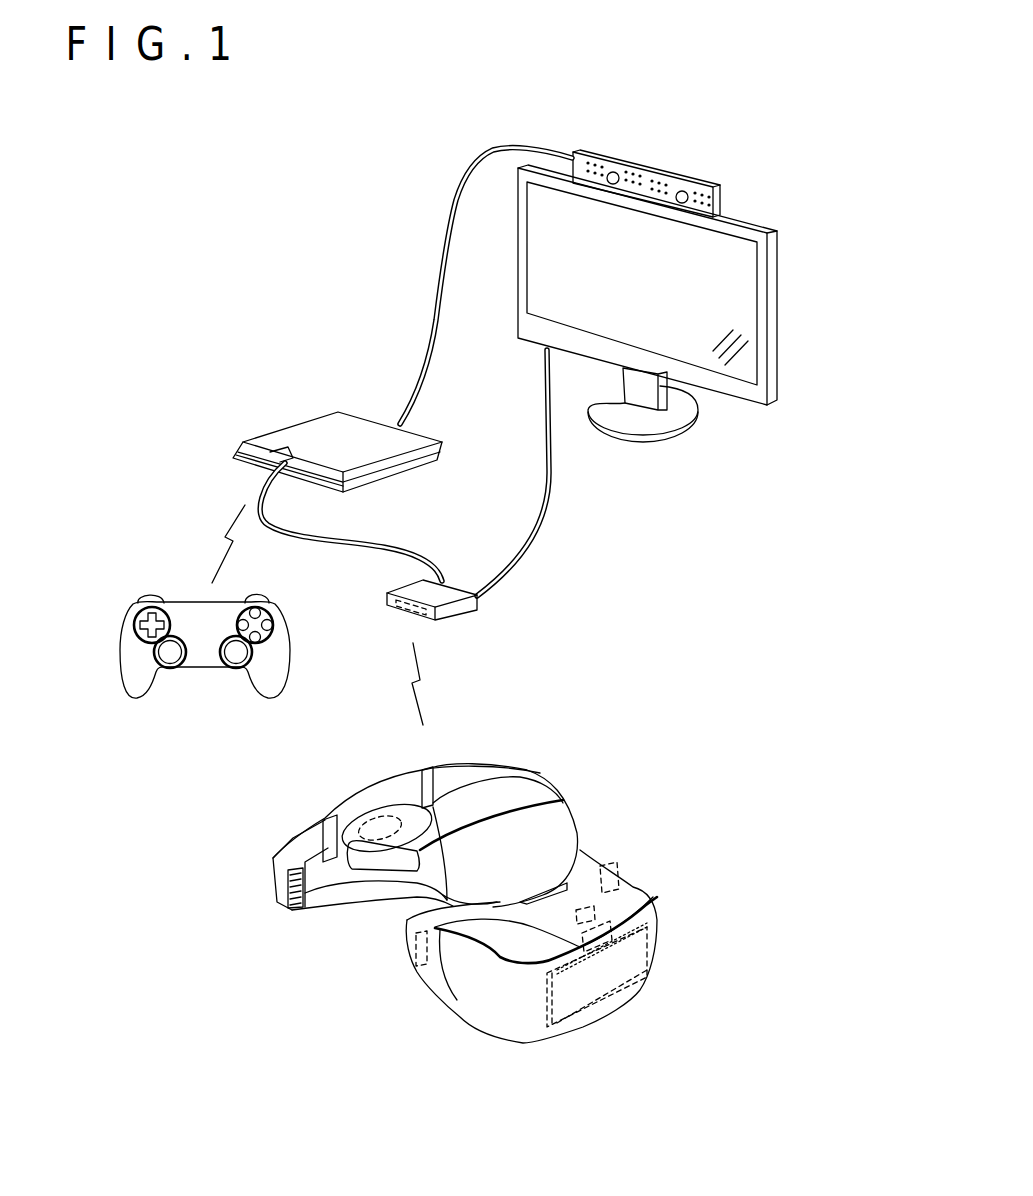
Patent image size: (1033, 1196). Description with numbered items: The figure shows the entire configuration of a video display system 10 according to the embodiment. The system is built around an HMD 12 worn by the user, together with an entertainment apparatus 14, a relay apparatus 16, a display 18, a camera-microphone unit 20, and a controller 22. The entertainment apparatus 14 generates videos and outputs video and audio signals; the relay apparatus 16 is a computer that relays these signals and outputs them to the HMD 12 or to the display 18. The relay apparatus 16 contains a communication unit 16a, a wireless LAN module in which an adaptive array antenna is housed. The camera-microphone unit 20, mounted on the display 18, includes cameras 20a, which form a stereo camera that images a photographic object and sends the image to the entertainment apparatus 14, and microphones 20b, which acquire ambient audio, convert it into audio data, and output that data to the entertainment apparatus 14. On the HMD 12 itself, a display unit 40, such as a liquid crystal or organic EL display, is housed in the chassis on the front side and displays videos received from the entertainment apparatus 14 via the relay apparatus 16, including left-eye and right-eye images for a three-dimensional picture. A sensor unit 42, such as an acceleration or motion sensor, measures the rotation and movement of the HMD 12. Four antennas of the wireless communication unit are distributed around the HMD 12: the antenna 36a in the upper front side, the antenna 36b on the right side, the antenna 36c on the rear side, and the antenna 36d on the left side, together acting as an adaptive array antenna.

The video display system 10 is at (760, 1033).
The HMD 12 is at (492, 1040).
The entertainment apparatus 14 is at (283, 432).
The relay apparatus 16 is at (459, 620).
The communication unit 16a is at (437, 621).
The display 18 is at (778, 311).
The camera-microphone unit 20 is at (722, 202).
The cameras 20a is at (613, 184).
The microphones 20b is at (641, 166).
The controller 22 is at (290, 655).
The antenna 36a is at (652, 888).
The antenna 36b is at (422, 970).
The antenna 36c is at (393, 830).
The antenna 36d is at (611, 864).
The display unit 40 is at (495, 916).
The sensor unit 42 is at (575, 915).